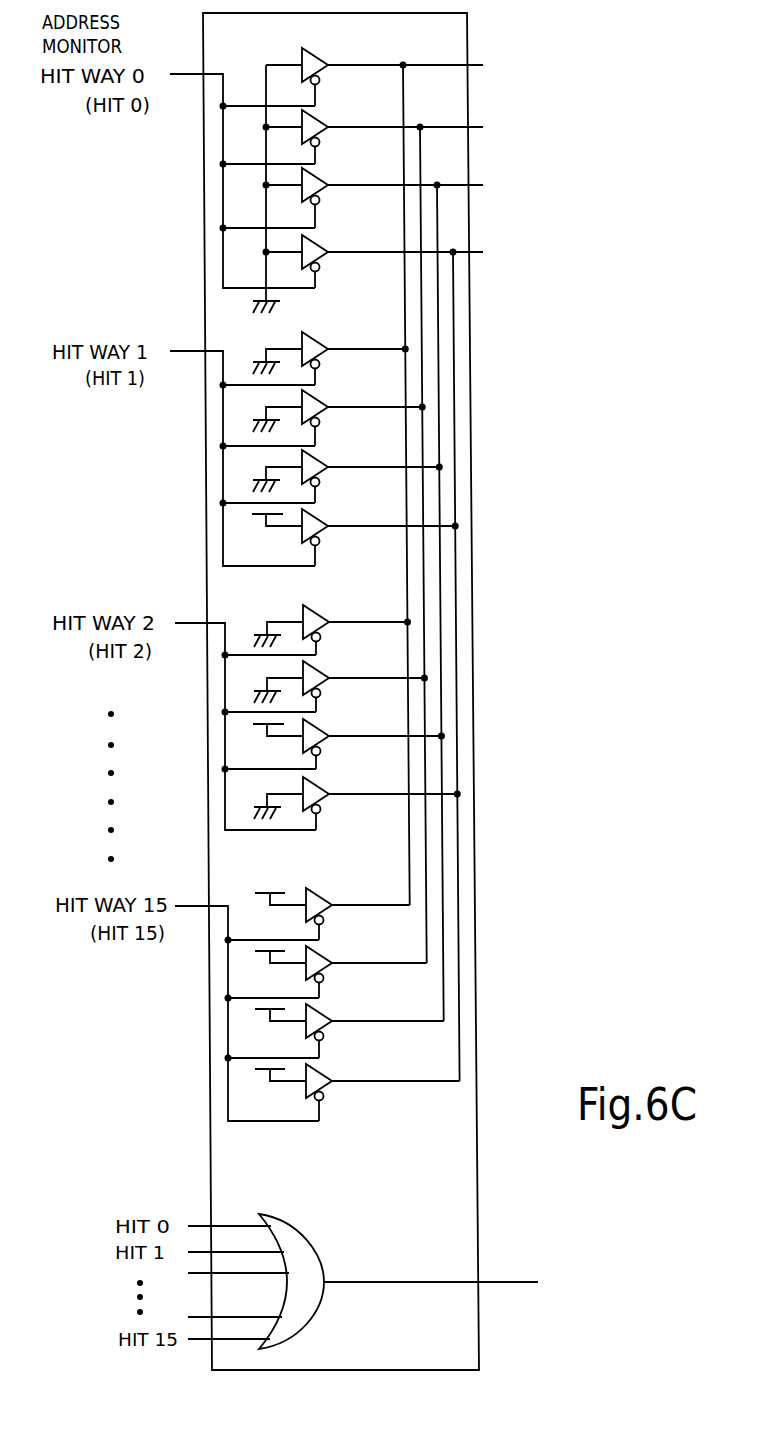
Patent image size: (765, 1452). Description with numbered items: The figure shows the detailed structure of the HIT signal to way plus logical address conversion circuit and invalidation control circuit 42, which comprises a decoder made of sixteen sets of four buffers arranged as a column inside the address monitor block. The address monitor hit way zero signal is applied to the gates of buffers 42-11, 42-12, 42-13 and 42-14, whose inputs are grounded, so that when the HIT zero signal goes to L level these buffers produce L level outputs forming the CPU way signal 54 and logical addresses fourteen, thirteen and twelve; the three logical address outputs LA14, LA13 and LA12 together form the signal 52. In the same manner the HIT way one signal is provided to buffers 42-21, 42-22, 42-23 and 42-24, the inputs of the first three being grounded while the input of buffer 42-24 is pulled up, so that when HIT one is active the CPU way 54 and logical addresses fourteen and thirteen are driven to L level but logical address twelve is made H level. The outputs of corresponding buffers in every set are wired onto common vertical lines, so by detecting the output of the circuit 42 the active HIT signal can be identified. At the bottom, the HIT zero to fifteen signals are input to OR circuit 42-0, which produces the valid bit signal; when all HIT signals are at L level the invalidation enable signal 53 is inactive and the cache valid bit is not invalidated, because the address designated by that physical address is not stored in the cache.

The HIT signal to way+LA(14:12) conversion circuit and invalidation control circuit 42 is at (467, 24).
The buffer 42-11 is at (313, 50).
The buffer 42-12 is at (313, 112).
The buffer 42-13 is at (313, 170).
The buffer 42-14 is at (313, 237).
The buffer 42-21 is at (313, 334).
The buffer 42-22 is at (313, 392).
The buffer 42-23 is at (313, 452).
The buffer 42-24 is at (313, 511).
The OR circuit 42-0 is at (318, 1308).
The signal formed by LA14, LA13 and LA12 52 is at (548, 105).
The invalidation enable signal 53 is at (435, 1282).
The CPU way signal 54 is at (506, 68).